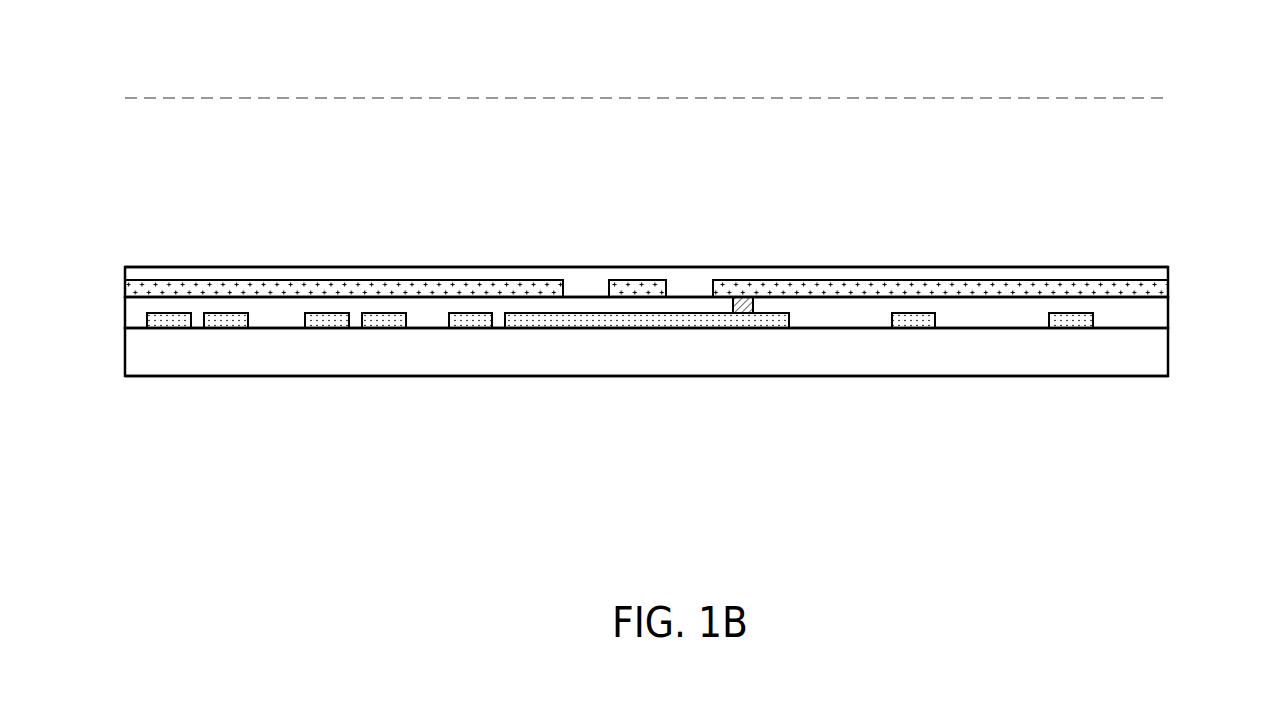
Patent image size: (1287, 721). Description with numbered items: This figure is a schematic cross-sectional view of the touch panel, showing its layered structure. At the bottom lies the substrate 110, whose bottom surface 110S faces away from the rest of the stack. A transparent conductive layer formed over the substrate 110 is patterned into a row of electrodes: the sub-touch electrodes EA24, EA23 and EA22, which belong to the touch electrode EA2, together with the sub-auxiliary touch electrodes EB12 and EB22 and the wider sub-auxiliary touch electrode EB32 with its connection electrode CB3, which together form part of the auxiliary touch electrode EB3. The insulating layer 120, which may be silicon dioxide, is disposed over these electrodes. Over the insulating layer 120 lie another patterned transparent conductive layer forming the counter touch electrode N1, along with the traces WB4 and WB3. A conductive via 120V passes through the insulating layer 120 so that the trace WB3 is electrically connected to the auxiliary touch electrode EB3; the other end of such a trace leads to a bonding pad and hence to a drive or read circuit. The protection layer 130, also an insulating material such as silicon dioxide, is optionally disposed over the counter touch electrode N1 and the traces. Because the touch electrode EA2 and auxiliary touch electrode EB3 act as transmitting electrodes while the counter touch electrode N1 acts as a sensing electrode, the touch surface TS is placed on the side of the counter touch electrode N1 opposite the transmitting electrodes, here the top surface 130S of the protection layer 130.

The touch surface TS is at (1110, 97).
The substrate 110 is at (1155, 350).
The bottom surface of the substrate 110S is at (1140, 377).
The insulating layer 120 is at (1152, 315).
The conductive via 120V is at (741, 305).
The protection layer 130 is at (1155, 274).
The top surface of the protection layer 130S is at (907, 267).
The counter touch electrode N1 is at (541, 290).
The trace WB3 is at (1020, 290).
The trace WB4 is at (645, 290).
The touch electrode EA2 is at (315, 232).
The sub-touch electrode EA22 is at (471, 264).
The sub-touch electrode EA23 is at (325, 318).
The sub-touch electrode EA24 is at (168, 318).
The sub-auxiliary touch electrode EB12 is at (226, 322).
The sub-auxiliary touch electrode EB22 is at (388, 322).
The auxiliary touch electrode EB3 is at (656, 405).
The sub-auxiliary touch electrode EB32 is at (632, 322).
The connection electrode CB3 is at (770, 370).